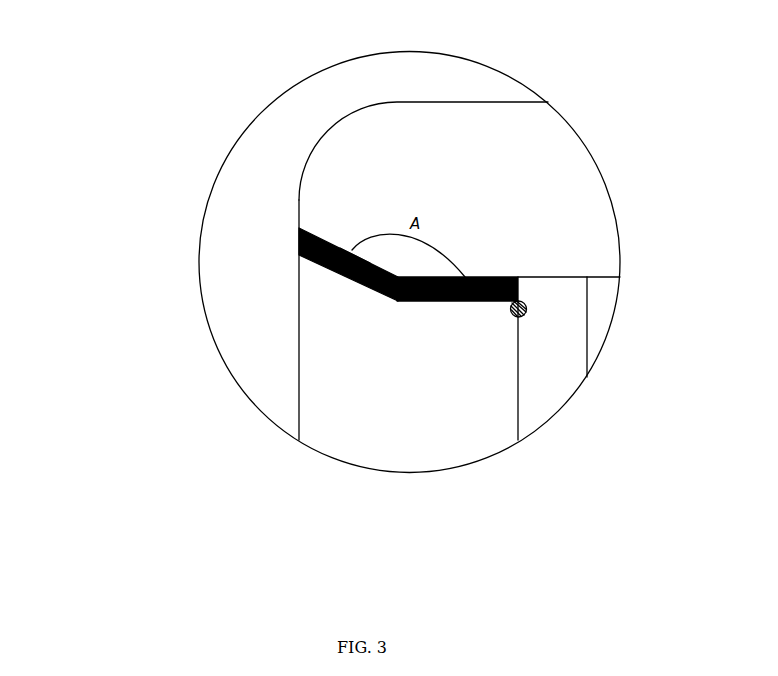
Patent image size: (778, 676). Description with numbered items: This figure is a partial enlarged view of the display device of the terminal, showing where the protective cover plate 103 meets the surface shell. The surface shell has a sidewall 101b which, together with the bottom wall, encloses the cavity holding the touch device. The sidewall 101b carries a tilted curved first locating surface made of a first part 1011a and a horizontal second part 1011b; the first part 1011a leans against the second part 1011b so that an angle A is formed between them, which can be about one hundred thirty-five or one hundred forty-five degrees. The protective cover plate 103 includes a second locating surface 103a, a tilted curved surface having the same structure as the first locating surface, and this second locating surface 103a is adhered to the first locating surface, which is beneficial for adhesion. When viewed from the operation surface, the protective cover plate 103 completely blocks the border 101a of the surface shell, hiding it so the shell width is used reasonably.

The border 101a is at (332, 375).
The sidewall 101b is at (527, 309).
The first part 1011a is at (298, 247).
The second part 1011b is at (488, 277).
The protective cover plate 103 is at (447, 180).
The second locating surface 103a is at (363, 257).